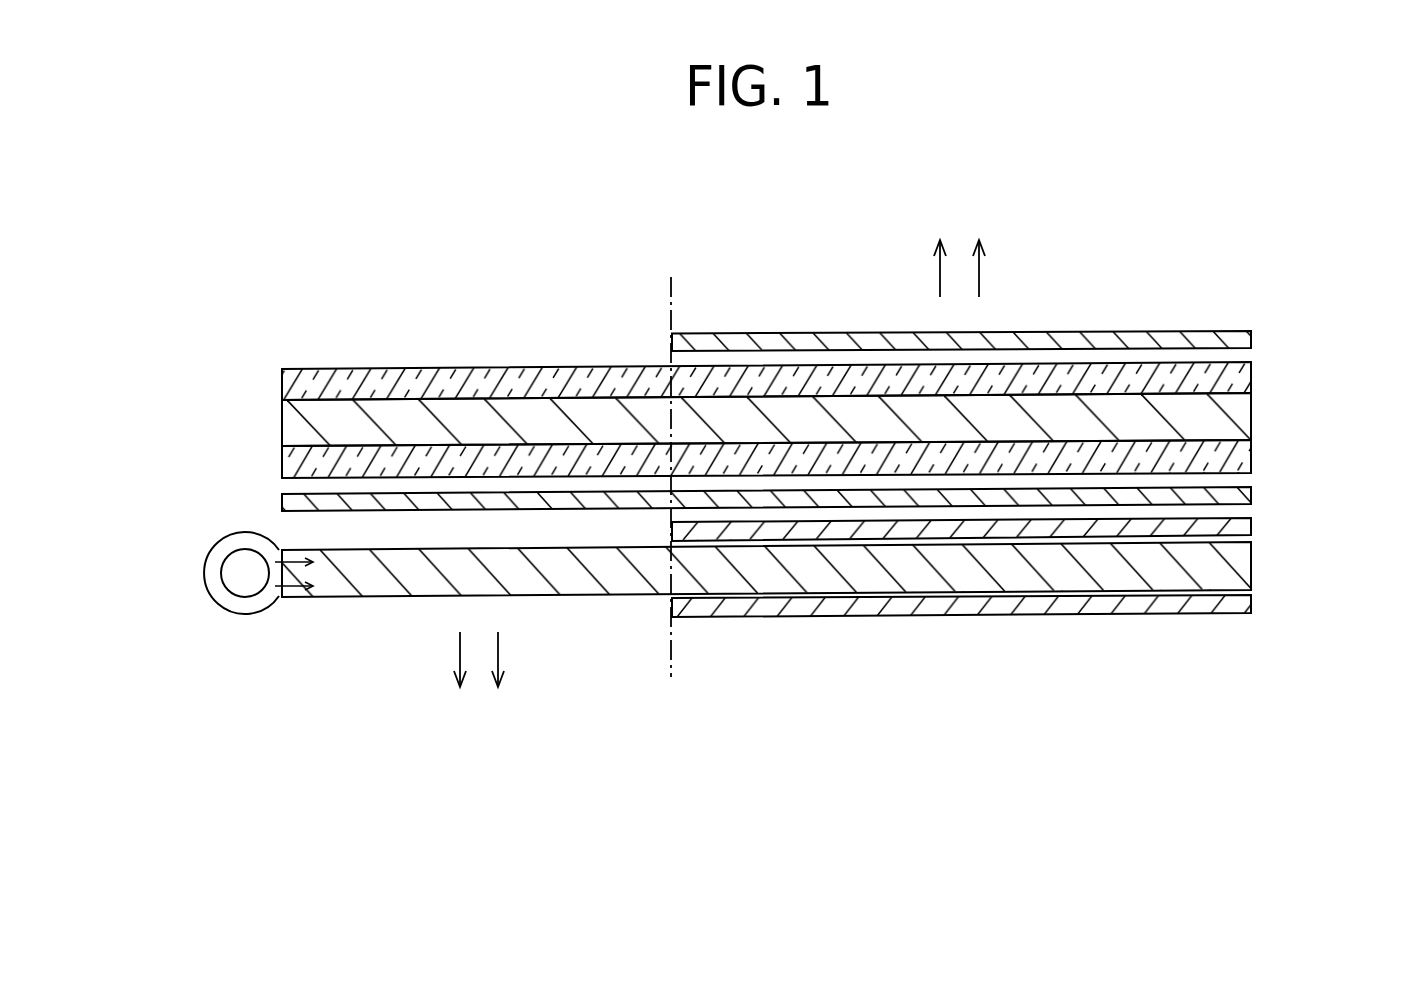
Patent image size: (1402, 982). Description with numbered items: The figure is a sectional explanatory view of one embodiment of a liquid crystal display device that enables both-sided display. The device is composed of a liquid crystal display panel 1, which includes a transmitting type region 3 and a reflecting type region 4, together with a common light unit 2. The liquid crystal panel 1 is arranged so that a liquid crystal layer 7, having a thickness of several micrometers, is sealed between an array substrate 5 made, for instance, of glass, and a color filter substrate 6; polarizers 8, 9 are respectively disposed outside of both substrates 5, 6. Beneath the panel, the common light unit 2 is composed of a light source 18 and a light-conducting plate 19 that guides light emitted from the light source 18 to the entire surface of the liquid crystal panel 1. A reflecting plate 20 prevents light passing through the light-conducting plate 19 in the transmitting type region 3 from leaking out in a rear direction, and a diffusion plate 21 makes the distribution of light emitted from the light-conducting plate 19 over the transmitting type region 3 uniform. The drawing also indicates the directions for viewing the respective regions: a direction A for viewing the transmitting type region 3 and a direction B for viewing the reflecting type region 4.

The liquid crystal display panel 1 is at (684, 386).
The common light unit 2 is at (205, 639).
The transmitting type region 3 is at (1045, 283).
The reflecting type region 4 is at (593, 648).
The array substrate 5 is at (312, 383).
The color filter substrate 6 is at (283, 465).
The liquid crystal layer 7 is at (290, 425).
The polarizer 8 is at (288, 500).
The polarizer 9 is at (768, 343).
The light source 18 is at (247, 583).
The light-conducting plate 19 is at (385, 585).
The reflecting plate 20 is at (1210, 603).
The diffusion plate 21 is at (1232, 527).
The direction A is at (938, 277).
The direction B is at (500, 650).